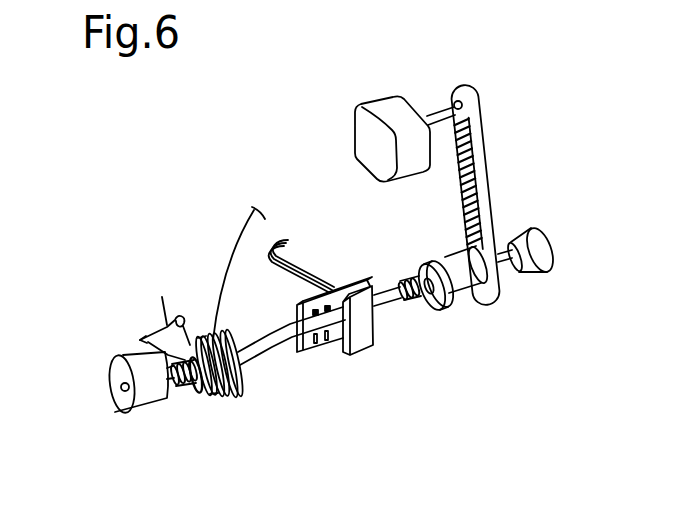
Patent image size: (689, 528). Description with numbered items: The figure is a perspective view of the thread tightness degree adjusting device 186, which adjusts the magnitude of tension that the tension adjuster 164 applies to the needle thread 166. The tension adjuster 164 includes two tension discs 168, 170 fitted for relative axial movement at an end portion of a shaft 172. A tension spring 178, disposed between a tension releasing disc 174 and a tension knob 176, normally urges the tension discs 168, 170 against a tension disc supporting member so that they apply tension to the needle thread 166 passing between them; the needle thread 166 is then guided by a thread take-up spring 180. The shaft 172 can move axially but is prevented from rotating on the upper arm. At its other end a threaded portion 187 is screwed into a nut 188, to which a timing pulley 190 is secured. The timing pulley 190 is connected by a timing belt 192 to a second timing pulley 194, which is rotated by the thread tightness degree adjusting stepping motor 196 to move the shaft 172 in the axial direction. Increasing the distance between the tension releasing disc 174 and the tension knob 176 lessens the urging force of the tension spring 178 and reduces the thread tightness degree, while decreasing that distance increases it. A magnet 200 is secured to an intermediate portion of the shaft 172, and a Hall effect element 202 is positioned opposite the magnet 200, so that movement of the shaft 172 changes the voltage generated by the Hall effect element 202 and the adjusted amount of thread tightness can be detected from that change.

The tension adjuster 164 is at (92, 365).
The needle thread 166 is at (230, 256).
The tension disc 168 is at (238, 387).
The tension disc 170 is at (220, 398).
The shaft 172 is at (270, 345).
The tension releasing disc 174 is at (200, 388).
The tension knob 176 is at (116, 396).
The tension spring 178 is at (183, 385).
The thread take-up spring 180 is at (162, 311).
The thread tightness degree adjusting device 186 is at (432, 339).
The threaded portion 187 is at (402, 285).
The nut 188 is at (428, 268).
The timing pulley 190 is at (486, 290).
The timing belt 192 is at (493, 183).
The timing pulley 194 is at (455, 93).
The thread tightness degree adjusting stepping motor 196 is at (379, 108).
The magnet 200 is at (363, 338).
The Hall effect element 202 is at (333, 290).